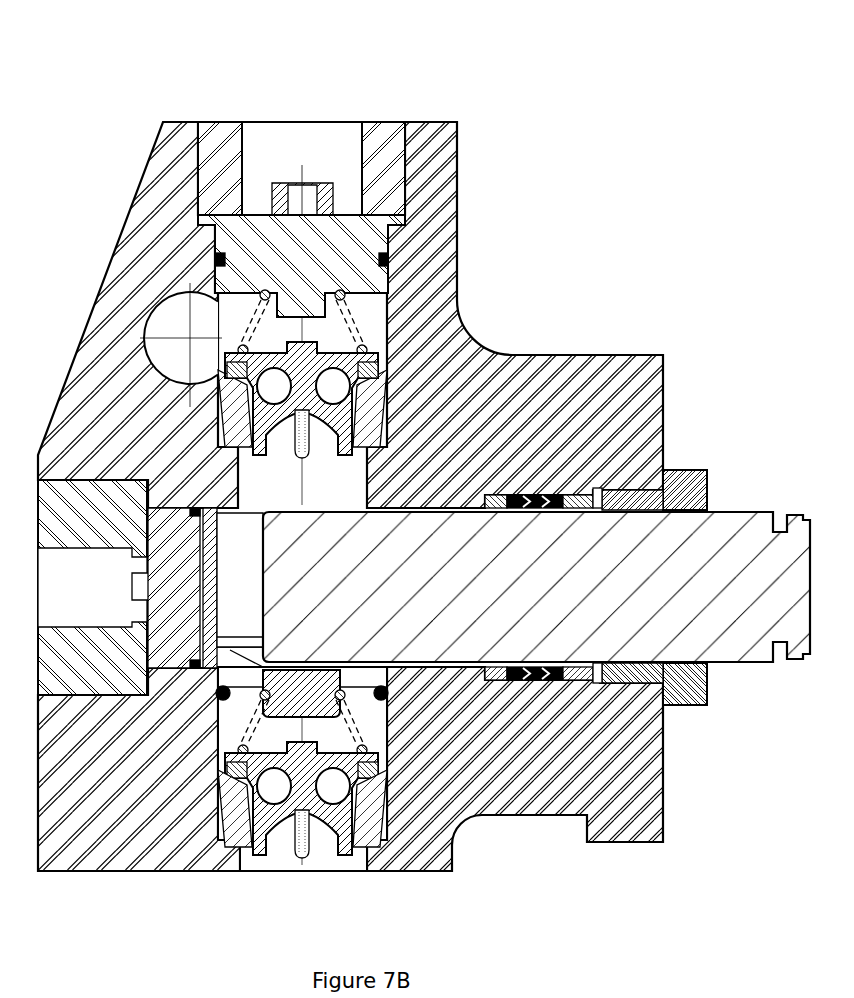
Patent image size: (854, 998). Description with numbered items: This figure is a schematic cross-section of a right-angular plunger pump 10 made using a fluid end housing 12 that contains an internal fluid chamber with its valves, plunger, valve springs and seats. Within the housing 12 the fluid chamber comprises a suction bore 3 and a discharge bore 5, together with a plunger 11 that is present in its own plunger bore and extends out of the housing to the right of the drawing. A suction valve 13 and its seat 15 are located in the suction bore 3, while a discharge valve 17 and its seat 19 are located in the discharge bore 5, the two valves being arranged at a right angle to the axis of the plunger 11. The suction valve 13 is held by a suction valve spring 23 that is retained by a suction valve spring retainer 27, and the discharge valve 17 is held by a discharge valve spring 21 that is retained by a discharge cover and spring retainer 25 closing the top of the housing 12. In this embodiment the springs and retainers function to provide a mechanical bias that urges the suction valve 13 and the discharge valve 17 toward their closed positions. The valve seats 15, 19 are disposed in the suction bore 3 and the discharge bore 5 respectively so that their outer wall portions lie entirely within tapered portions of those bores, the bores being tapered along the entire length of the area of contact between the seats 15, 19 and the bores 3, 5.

The right-angular plunger pump 10 is at (424, 479).
The fluid end housing 12 is at (457, 172).
The plunger 11 is at (797, 660).
The discharge cover and spring retainer 25 is at (352, 213).
The discharge bore 5 is at (280, 468).
The discharge valve spring 21 is at (393, 322).
The discharge valve 17 is at (355, 320).
The discharge valve seat 19 is at (380, 358).
The suction valve spring retainer 27 is at (273, 715).
The suction valve spring 23 is at (353, 720).
The suction valve 13 is at (370, 758).
The suction bore 3 is at (324, 845).
The suction valve seat 15 is at (361, 847).